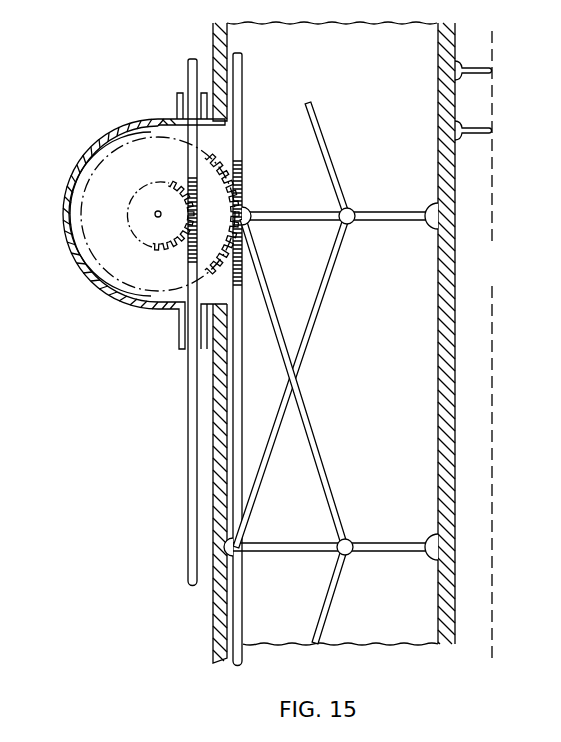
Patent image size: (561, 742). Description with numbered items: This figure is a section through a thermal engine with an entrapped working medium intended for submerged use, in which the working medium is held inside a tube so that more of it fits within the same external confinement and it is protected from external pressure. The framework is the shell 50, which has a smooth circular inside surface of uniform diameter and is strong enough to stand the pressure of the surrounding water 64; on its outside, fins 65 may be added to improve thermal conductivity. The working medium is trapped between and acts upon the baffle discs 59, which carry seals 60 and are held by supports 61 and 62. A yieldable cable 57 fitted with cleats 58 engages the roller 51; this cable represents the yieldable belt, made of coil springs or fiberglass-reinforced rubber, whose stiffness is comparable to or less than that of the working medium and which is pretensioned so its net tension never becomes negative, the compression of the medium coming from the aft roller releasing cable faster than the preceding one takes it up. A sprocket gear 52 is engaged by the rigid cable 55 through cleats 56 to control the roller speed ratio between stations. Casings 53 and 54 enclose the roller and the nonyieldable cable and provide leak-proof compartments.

The shell 50 is at (437, 368).
The roller 51 is at (118, 282).
The sprocket gear 52 is at (125, 197).
The casing 53 is at (70, 262).
The casing 54 is at (178, 330).
The rigid cable 55 is at (190, 432).
The cleats 56 is at (190, 262).
The cable 57 is at (243, 390).
The cleats 58 is at (247, 288).
The baffle discs 59 is at (385, 211).
The seals 60 is at (430, 228).
The support 61 is at (326, 295).
The support 62 is at (323, 140).
The water 64 is at (501, 346).
The fins 65 is at (493, 127).